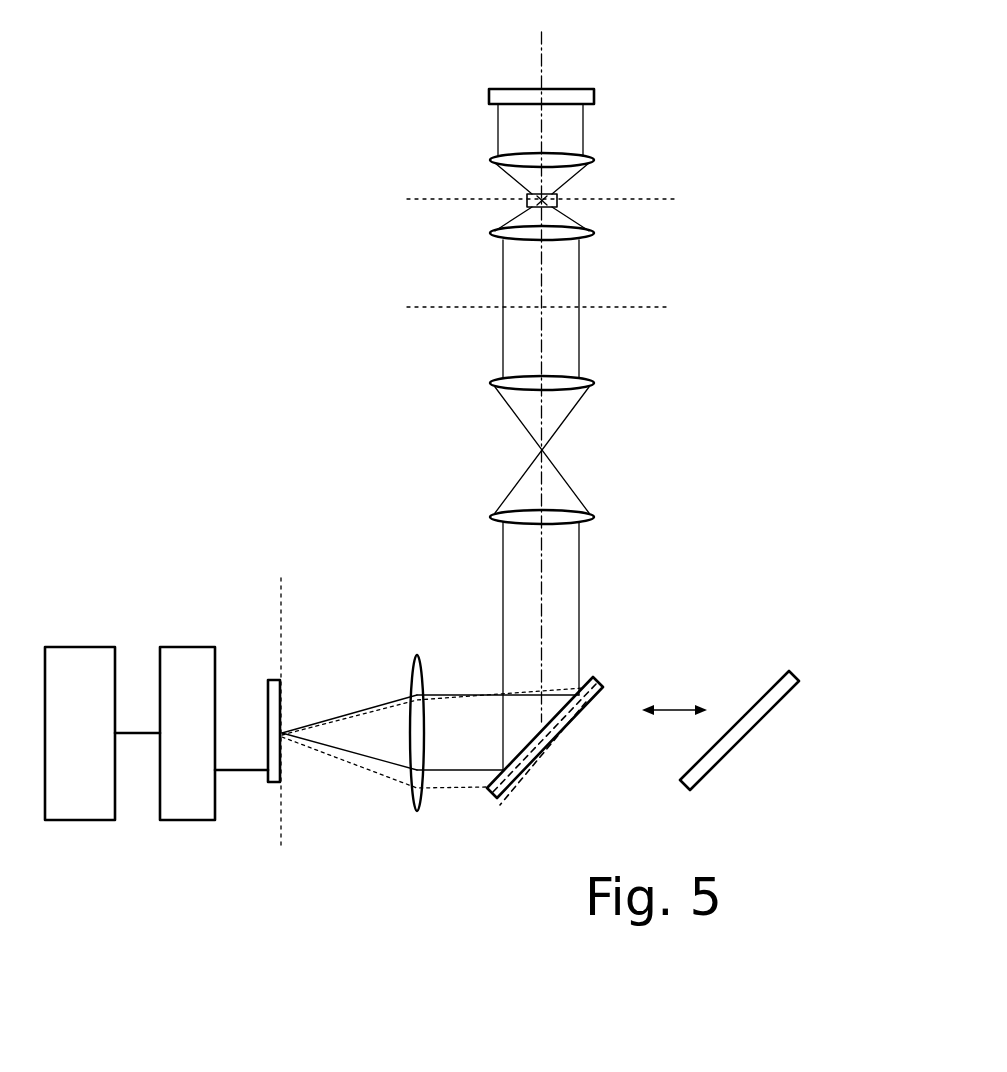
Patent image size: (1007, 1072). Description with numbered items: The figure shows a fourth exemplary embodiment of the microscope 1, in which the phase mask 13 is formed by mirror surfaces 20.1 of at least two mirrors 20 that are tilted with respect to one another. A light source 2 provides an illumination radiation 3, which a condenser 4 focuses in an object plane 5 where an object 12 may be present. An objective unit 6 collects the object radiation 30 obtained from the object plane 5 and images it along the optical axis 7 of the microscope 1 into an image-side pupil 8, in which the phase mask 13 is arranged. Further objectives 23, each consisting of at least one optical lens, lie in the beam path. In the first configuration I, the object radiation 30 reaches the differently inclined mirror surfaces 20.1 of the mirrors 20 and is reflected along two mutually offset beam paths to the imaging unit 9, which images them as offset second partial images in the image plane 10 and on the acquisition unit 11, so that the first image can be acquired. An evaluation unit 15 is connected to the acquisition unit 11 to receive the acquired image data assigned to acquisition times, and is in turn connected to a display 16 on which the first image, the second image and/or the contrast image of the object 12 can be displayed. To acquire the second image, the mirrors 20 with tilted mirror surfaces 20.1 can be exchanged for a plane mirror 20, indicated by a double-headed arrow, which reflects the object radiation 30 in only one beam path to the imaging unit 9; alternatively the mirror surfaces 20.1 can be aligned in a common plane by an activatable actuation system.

The first configuration I is at (343, 52).
The microscope 1 is at (440, 108).
The light source 2 is at (594, 92).
The illumination radiation 3 is at (583, 132).
The condenser 4 is at (590, 161).
The object plane 5 is at (643, 198).
The objective unit 6 is at (592, 233).
The optical axis 7 is at (542, 35).
The image-side pupil 8 is at (456, 307).
The imaging unit 9 is at (411, 676).
The image plane 10 is at (281, 590).
The acquisition unit 11 is at (268, 680).
The object 12 is at (556, 195).
The phase mask 13 is at (720, 628).
The evaluation unit 15 is at (191, 733).
The display 16 is at (80, 733).
The mirror 20 is at (505, 800).
The mirror surfaces 20.1 is at (710, 748).
The further objectives 23 is at (577, 386).
The object radiation 30 is at (580, 296).